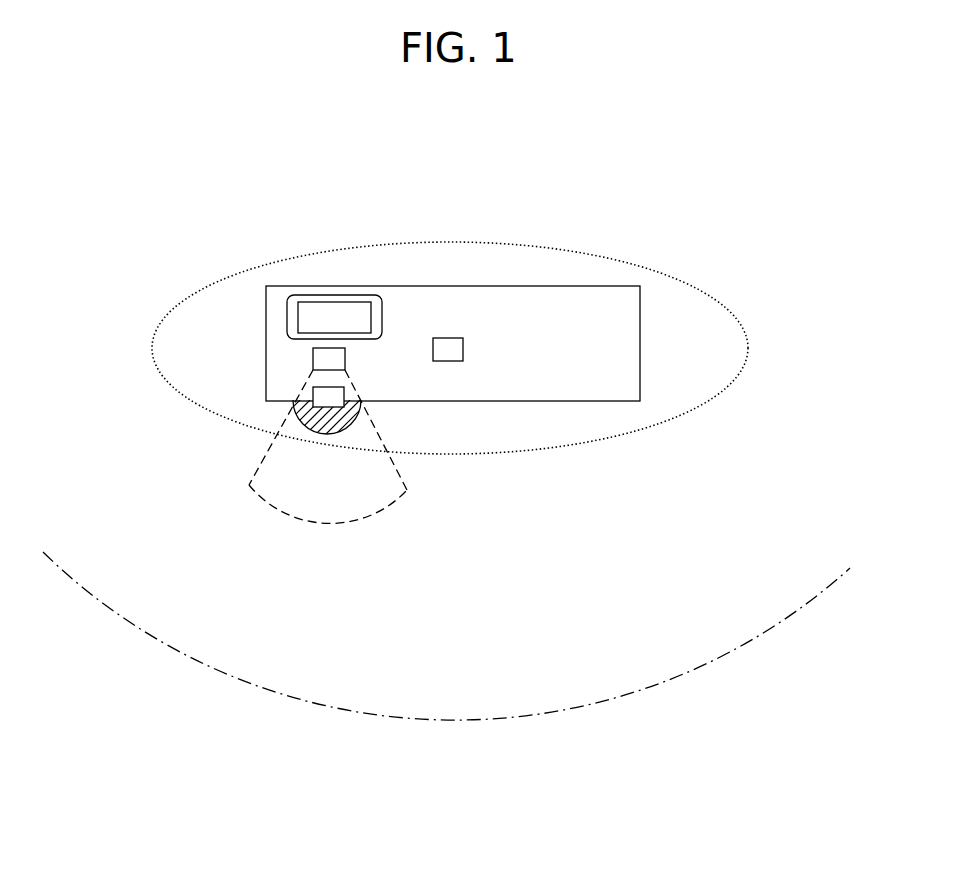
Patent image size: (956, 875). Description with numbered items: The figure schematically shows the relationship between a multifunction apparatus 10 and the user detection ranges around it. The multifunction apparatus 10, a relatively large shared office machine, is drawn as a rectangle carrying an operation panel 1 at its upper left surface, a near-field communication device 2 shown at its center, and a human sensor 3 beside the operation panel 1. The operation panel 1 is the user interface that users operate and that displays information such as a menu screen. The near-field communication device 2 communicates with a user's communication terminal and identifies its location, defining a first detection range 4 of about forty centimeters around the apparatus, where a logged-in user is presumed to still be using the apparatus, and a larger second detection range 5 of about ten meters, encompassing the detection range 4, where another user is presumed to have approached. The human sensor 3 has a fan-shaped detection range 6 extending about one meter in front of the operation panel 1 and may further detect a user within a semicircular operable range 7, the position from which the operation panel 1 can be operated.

The operation panel 1 is at (323, 307).
The near-field communication device 2 is at (450, 338).
The human sensor 3 is at (317, 358).
The detection range 4 is at (687, 287).
The detection range 5 is at (672, 632).
The fan-shaped detection range 6 is at (283, 495).
The semicircular operable range 7 is at (300, 416).
The multifunction apparatus 10 is at (578, 288).